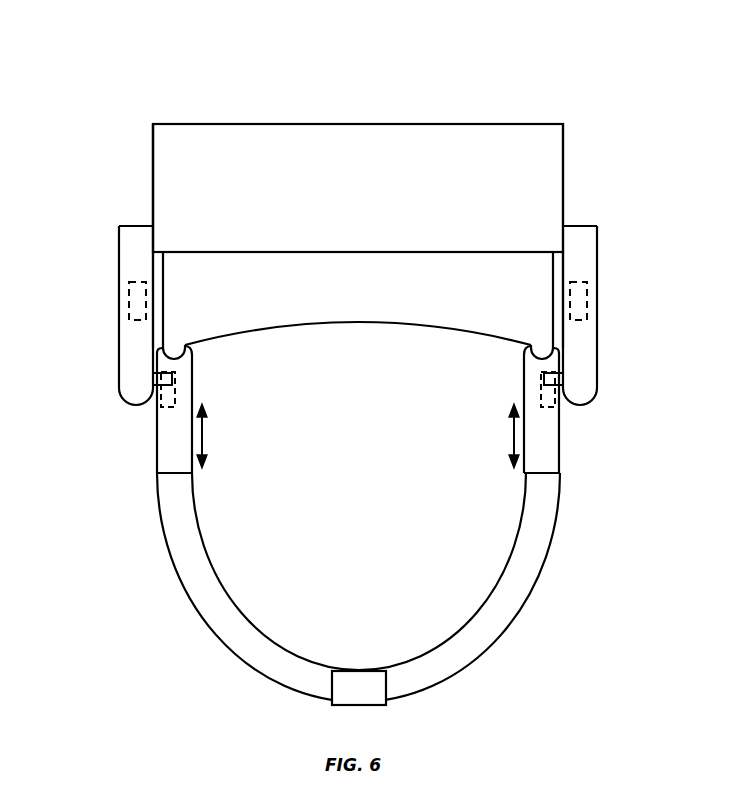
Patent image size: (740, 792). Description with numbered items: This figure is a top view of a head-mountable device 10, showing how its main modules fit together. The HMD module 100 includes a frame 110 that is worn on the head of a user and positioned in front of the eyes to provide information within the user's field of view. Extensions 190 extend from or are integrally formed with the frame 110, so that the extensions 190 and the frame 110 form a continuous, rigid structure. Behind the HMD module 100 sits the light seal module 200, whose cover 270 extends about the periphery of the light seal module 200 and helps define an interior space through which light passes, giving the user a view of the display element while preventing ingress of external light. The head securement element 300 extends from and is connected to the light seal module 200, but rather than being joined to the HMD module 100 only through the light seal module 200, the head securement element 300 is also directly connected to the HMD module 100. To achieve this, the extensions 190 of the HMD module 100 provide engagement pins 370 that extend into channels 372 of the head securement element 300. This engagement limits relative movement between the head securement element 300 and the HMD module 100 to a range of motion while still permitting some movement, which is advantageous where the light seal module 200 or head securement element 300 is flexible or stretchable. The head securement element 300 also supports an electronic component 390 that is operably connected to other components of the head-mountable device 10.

The head-mountable device 10 is at (141, 104).
The HMD module 100 is at (152, 125).
The frame 110 is at (157, 151).
The extensions 190 is at (132, 233).
The light seal module 200 is at (158, 280).
The cover 270 is at (556, 288).
The head securement element 300 is at (158, 505).
The engagement pins 370 is at (155, 378).
The channels 372 is at (177, 388).
The electronic component 390 is at (128, 305).